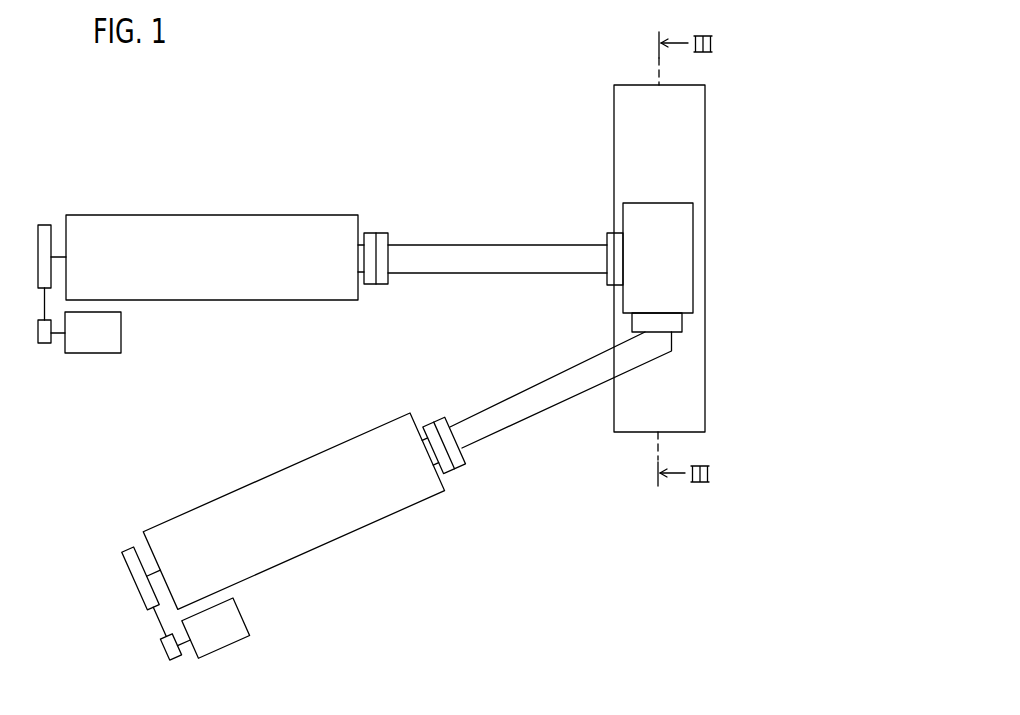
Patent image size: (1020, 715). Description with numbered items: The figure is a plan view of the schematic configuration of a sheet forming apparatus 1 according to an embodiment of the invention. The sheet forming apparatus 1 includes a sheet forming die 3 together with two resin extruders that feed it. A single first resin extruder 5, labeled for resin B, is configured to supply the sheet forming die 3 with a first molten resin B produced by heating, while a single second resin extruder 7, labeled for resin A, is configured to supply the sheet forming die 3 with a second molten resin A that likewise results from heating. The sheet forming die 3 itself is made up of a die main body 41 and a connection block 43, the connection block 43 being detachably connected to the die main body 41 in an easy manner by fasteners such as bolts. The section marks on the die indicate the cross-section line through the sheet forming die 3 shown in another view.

The sheet forming apparatus 1 is at (463, 90).
The sheet forming die 3 is at (707, 136).
The die main body 41 is at (706, 170).
The connection block 43 is at (695, 257).
The first resin extruder 5 is at (212, 215).
The second resin extruder 7 is at (313, 550).